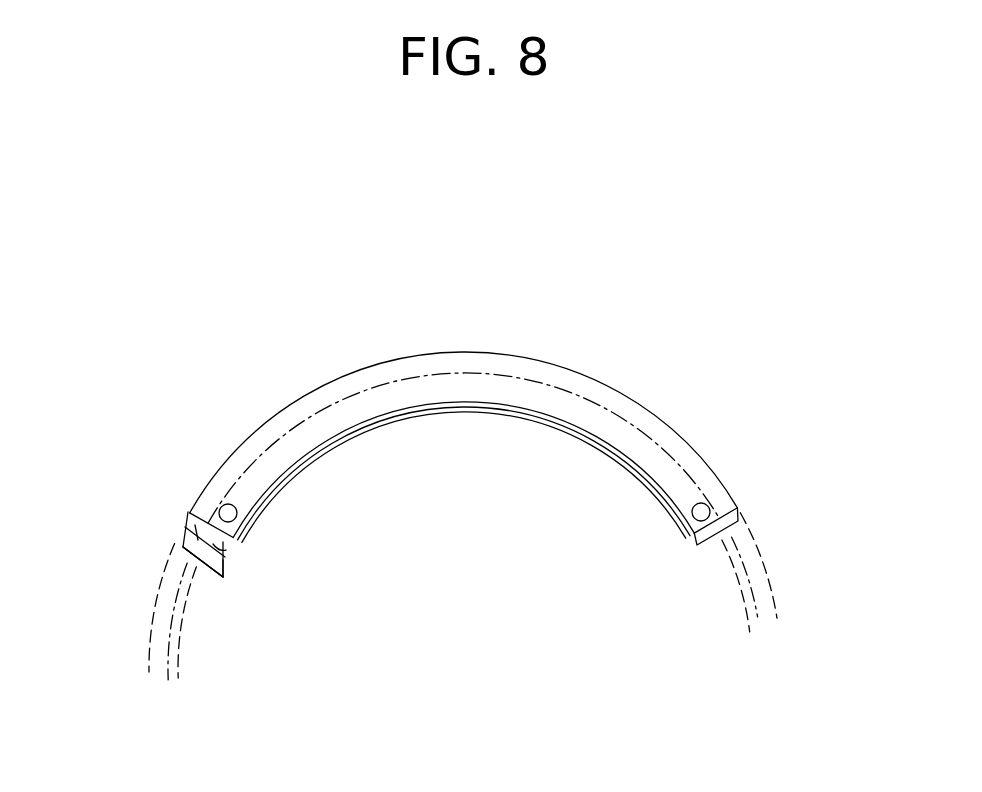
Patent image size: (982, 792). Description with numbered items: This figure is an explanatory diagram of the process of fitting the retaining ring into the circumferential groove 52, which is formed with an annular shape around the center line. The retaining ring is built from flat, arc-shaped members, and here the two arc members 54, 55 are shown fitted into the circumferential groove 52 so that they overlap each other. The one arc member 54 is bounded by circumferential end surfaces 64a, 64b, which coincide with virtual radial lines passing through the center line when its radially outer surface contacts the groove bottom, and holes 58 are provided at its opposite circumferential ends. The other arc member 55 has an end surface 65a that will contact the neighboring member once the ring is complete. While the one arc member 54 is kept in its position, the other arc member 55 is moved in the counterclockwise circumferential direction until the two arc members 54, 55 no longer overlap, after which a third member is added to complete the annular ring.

The circumferential groove 52 is at (745, 571).
The arc member 54 is at (466, 366).
The arc member 55 is at (465, 412).
The hole 58 is at (229, 504).
The circumferential end surface 64a is at (184, 545).
The circumferential end surface 64b is at (742, 533).
The end surface 65a is at (208, 578).